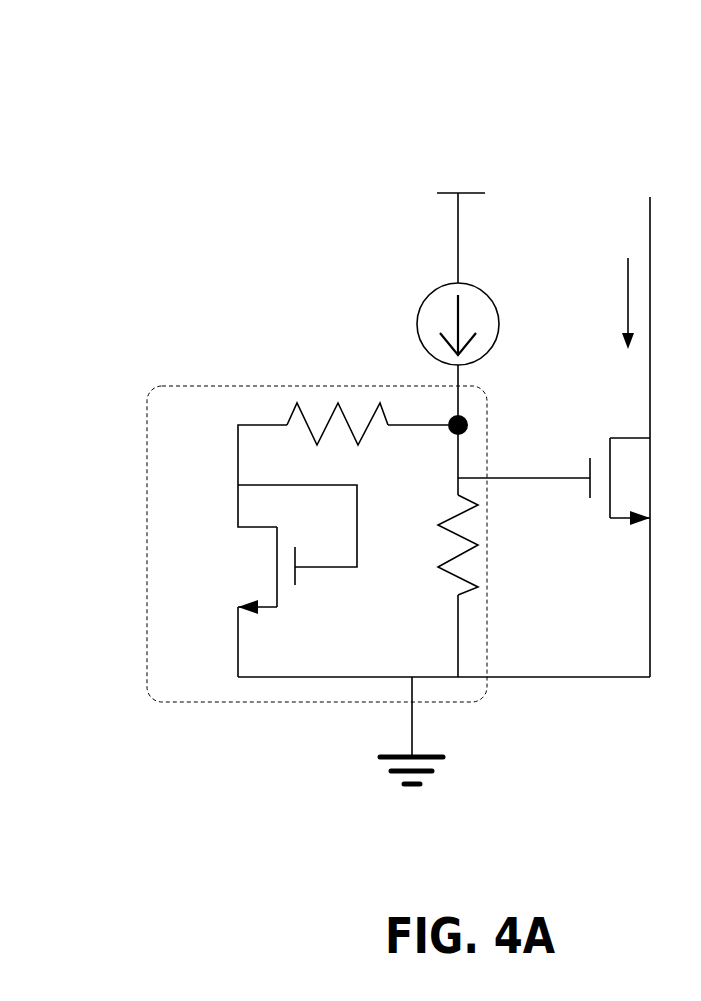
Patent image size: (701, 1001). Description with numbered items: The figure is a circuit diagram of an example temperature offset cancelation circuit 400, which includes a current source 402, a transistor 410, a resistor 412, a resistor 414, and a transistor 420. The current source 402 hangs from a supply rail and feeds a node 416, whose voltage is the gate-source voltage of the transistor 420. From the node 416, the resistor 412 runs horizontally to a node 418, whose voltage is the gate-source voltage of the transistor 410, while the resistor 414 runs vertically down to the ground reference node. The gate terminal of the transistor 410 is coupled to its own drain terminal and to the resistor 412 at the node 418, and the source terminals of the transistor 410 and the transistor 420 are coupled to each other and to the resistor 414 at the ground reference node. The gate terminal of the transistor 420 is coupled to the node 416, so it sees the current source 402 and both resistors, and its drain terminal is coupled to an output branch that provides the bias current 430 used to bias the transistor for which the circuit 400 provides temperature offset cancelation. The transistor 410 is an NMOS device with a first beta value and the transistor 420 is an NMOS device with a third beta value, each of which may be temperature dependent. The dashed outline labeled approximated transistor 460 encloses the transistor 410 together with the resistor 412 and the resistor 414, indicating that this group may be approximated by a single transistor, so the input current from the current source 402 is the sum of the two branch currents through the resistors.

The temperature offset cancelation circuit 400 is at (226, 94).
The current source 402 is at (427, 298).
The transistor 410 is at (276, 565).
The resistor 412 is at (368, 428).
The resistor 414 is at (446, 572).
The node 416 is at (468, 431).
The node 418 is at (237, 425).
The transistor 420 is at (612, 478).
The bias current 430 is at (627, 278).
The approximated transistor 460 is at (283, 386).